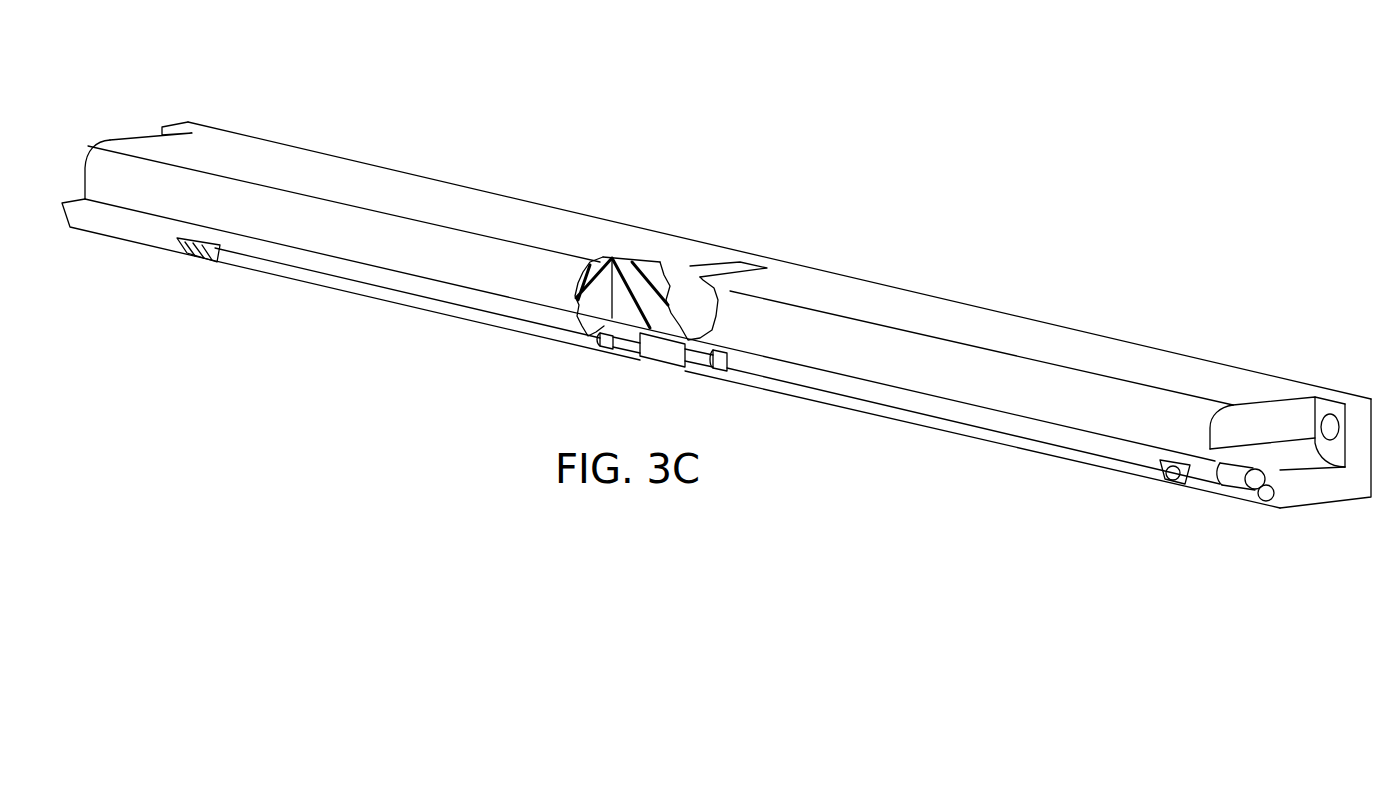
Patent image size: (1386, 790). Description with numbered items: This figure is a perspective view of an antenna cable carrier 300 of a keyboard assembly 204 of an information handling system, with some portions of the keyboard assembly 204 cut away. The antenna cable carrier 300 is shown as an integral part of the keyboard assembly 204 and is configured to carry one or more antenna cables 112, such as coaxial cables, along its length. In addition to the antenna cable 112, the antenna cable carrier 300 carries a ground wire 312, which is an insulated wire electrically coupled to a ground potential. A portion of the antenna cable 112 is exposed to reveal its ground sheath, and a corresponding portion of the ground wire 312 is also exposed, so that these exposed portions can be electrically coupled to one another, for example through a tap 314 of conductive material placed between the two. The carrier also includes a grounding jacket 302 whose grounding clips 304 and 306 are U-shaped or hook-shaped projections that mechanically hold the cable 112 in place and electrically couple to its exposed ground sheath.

The keyboard assembly 204 is at (263, 148).
The grounding jacket 302 is at (947, 428).
The grounding clip 306 is at (830, 405).
The tap 314 is at (663, 365).
The grounding clip 304 is at (1183, 468).
The antenna cable 112 is at (1173, 487).
The ground wire 312 is at (1277, 503).
The antenna cable carrier 300 is at (1243, 587).